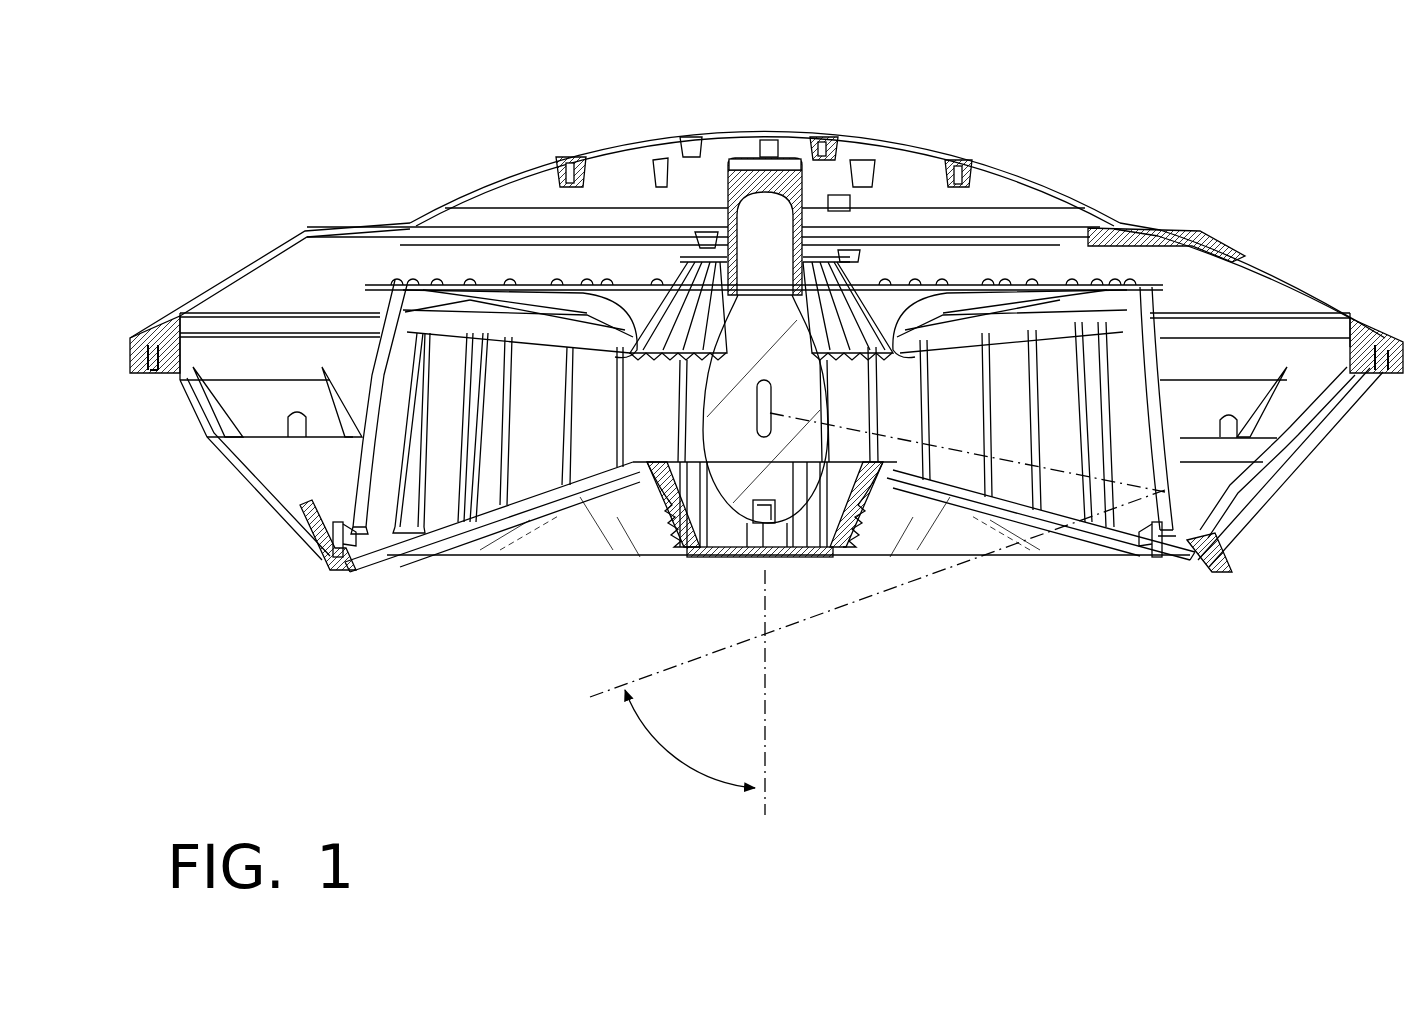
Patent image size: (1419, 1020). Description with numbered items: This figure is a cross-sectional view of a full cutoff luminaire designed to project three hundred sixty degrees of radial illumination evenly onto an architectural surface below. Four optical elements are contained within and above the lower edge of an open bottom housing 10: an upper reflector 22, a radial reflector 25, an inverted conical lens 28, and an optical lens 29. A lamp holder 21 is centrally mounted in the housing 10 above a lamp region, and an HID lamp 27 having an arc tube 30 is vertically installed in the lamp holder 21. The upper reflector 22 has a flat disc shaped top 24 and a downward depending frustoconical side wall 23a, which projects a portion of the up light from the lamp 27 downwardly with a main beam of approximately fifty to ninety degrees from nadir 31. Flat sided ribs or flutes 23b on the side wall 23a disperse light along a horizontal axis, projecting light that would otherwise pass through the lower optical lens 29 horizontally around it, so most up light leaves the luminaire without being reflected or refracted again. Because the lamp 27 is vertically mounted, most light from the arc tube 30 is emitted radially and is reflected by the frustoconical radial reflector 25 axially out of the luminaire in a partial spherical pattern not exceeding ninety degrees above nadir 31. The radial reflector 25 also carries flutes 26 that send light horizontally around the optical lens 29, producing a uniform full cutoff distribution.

The open bottom housing 10 is at (213, 257).
The lamp holder 21 is at (728, 215).
The upper reflector 22 is at (843, 325).
The frustoconical side wall 23a is at (823, 257).
The flutes 23b is at (857, 267).
The flat disc shaped top 24 is at (712, 240).
The radial reflector 25 is at (352, 478).
The flutes 26 is at (513, 352).
The lamp 27 is at (793, 483).
The inverted conical lens 28 is at (453, 557).
The optical lens 29 is at (873, 500).
The arc tube 30 is at (760, 415).
The nadir 31 is at (877, 635).